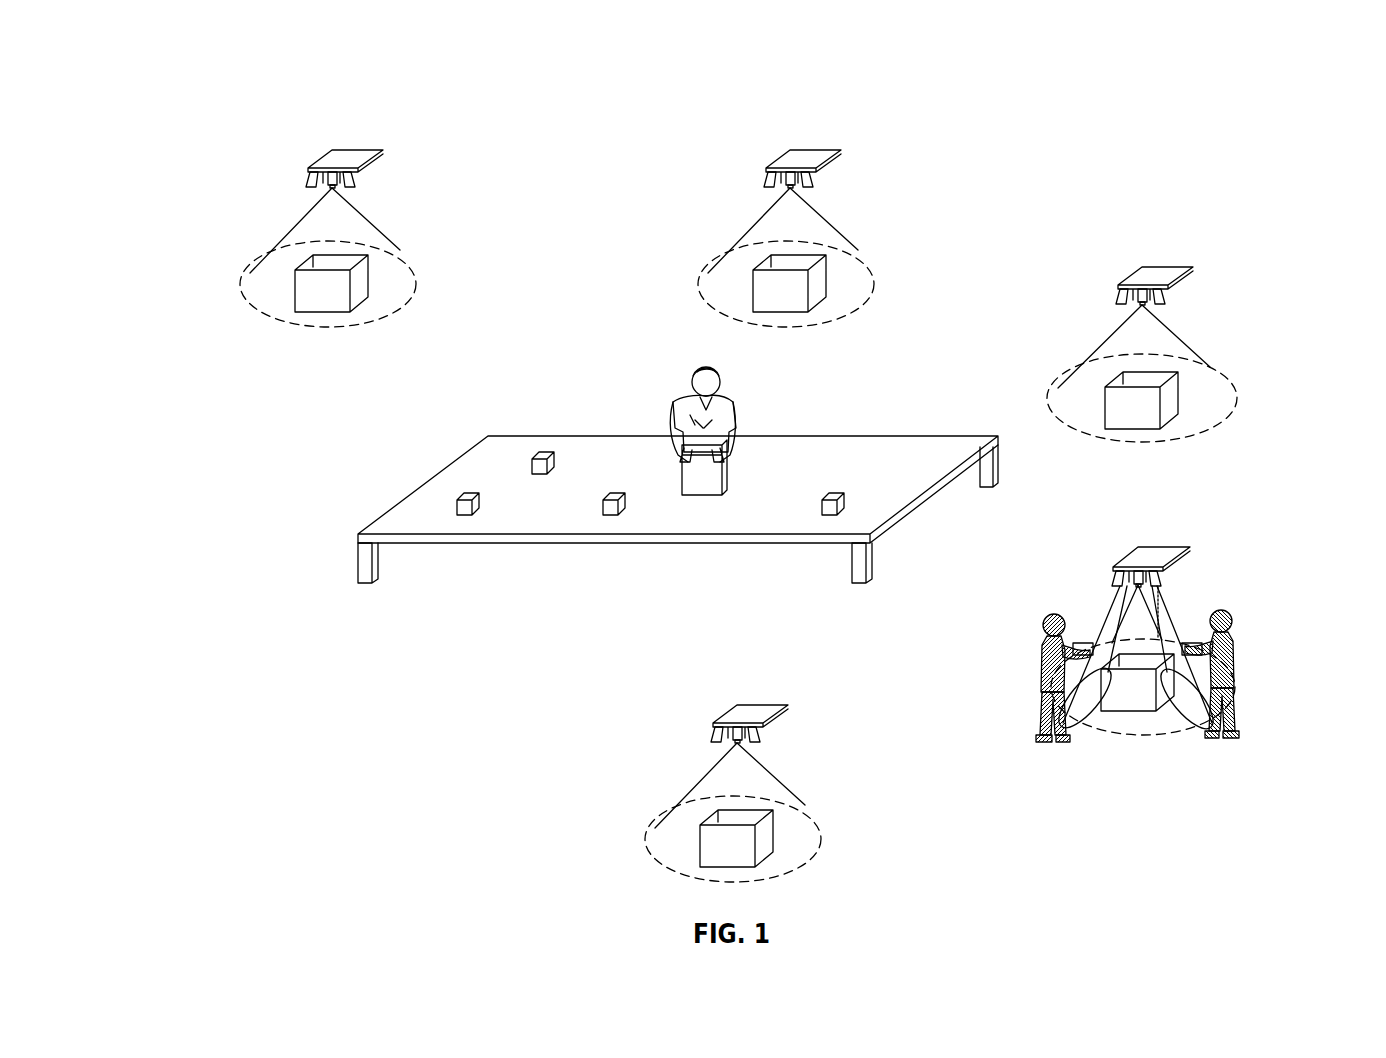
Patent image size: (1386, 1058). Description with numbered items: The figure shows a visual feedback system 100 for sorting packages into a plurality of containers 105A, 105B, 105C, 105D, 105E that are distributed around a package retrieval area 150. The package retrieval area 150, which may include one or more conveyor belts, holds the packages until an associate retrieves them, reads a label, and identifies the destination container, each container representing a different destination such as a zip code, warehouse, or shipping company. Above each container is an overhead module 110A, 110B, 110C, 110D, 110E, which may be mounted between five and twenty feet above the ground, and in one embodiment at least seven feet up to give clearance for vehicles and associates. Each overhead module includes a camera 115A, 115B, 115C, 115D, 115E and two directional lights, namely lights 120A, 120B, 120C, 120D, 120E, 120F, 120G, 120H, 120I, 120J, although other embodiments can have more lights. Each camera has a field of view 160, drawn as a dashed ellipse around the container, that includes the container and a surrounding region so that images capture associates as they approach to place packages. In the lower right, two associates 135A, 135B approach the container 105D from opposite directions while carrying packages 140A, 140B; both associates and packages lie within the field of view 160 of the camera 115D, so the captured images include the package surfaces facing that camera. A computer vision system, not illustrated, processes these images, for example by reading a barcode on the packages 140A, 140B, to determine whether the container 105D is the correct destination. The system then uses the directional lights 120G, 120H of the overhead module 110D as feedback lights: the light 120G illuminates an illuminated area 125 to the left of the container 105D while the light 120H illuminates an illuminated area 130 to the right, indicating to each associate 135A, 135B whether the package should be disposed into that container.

The visual feedback system 100 is at (1076, 142).
The container 105A is at (461, 273).
The container 105B is at (848, 273).
The container 105C is at (1201, 391).
The container 105D is at (1128, 710).
The container 105E is at (796, 828).
The overhead module 110A is at (356, 133).
The overhead module 110B is at (814, 133).
The overhead module 110C is at (1165, 250).
The overhead module 110D is at (1163, 547).
The overhead module 110E is at (760, 688).
The camera 115A is at (432, 195).
The camera 115B is at (839, 195).
The camera 115C is at (1190, 311).
The camera 115D is at (1135, 570).
The camera 115E is at (785, 750).
The directional light 120A is at (254, 175).
The directional light 120B is at (435, 168).
The directional light 120C is at (716, 168).
The directional light 120D is at (856, 168).
The directional light 120E is at (1067, 285).
The directional light 120F is at (1206, 285).
The directional light 120G is at (1115, 577).
The directional light 120H is at (1163, 577).
The directional light 120I is at (668, 723).
The directional light 120J is at (800, 723).
The illuminated area 125 is at (1082, 715).
The illuminated area 130 is at (1177, 735).
The associate 135A is at (1045, 655).
The associate 135B is at (1232, 650).
The package 140A is at (1085, 640).
The package 140B is at (1190, 640).
The package retrieval area 150 is at (608, 545).
The field of view 160 is at (255, 312).